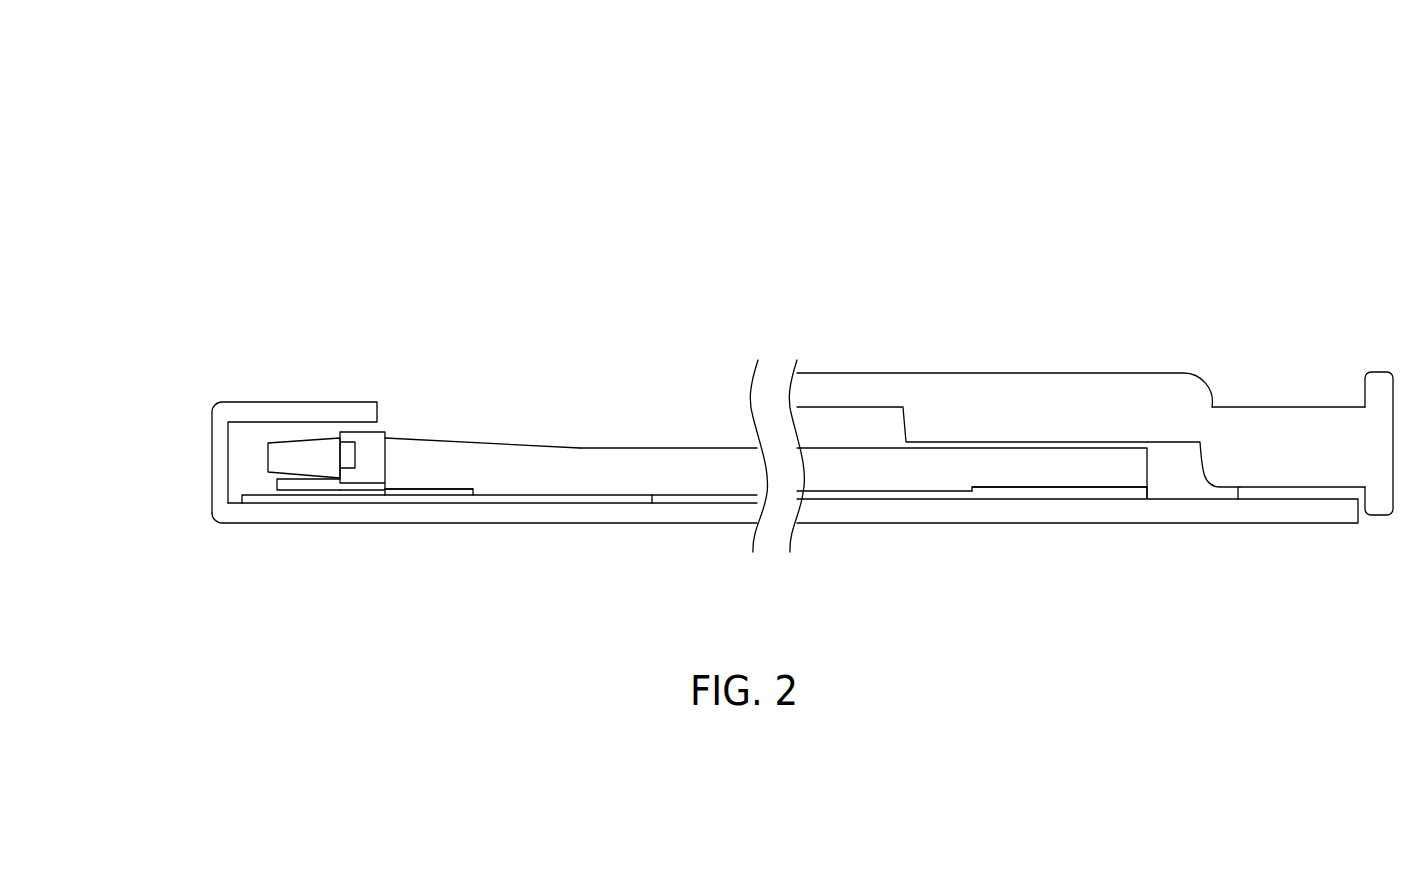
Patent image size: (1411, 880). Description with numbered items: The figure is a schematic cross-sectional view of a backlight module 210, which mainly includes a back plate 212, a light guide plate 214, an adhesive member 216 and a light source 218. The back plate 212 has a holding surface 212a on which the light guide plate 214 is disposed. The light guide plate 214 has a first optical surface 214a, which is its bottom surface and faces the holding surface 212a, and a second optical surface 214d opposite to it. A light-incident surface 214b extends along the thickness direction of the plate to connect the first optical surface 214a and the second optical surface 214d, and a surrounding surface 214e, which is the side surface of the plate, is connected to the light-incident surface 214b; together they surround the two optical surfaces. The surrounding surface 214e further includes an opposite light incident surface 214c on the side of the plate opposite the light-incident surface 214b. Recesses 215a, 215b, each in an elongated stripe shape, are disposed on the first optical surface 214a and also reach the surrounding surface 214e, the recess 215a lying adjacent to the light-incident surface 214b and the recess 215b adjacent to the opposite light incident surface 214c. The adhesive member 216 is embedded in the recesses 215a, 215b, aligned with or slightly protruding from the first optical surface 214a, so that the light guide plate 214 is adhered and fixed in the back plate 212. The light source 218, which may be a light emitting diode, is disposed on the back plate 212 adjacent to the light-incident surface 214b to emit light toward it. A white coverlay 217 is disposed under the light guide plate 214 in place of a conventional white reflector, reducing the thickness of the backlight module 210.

The backlight module 210 is at (184, 260).
The back plate 212 is at (212, 460).
The holding surface 212a is at (317, 513).
The light guide plate 214 is at (573, 467).
The first optical surface 214a is at (502, 503).
The light-incident surface 214b is at (382, 453).
The opposite light incident surface 214c is at (1147, 470).
The second optical surface 214d is at (510, 443).
The surrounding surface 214e is at (693, 475).
The recess 215a is at (443, 488).
The recess 215b is at (1007, 487).
The adhesive member 216 is at (401, 491).
The white coverlay 217 is at (592, 503).
The light source 218 is at (367, 460).